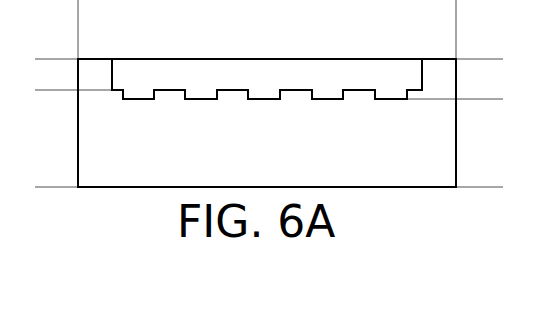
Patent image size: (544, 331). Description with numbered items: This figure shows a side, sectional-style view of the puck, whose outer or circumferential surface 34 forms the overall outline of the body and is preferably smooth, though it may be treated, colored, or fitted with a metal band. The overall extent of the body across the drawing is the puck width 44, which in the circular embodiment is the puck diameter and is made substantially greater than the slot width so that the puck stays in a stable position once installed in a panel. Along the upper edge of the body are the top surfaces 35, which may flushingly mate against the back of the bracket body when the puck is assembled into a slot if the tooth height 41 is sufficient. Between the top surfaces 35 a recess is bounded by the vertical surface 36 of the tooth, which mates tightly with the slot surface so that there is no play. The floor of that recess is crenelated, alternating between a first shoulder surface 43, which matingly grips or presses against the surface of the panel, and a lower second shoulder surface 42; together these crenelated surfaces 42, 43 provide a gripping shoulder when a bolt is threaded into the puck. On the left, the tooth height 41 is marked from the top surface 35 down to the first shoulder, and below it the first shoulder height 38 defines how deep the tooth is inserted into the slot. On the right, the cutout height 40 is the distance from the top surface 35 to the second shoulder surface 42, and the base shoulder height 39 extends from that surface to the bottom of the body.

The outer surface 34 is at (252, 162).
The top surface 35 is at (408, 52).
The vertical surface 36 is at (142, 72).
The first shoulder height 38 is at (42, 187).
The base shoulder height 39 is at (494, 99).
The cutout height 40 is at (494, 36).
The tooth height 41 is at (42, 128).
The second shoulder surface 42 is at (328, 92).
The first shoulder surface 43 is at (235, 84).
The puck width 44 is at (456, 6).